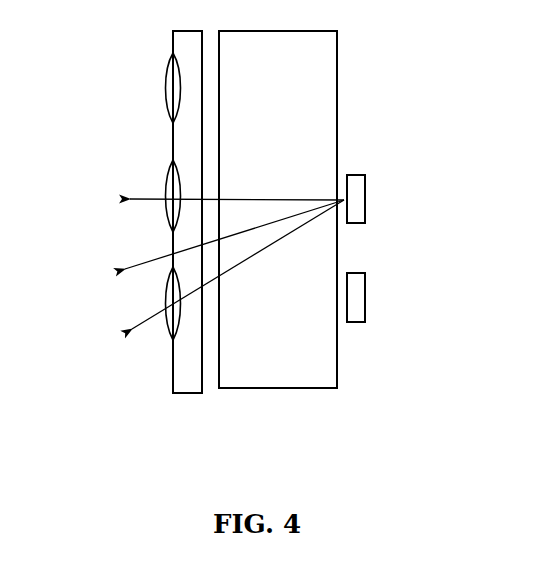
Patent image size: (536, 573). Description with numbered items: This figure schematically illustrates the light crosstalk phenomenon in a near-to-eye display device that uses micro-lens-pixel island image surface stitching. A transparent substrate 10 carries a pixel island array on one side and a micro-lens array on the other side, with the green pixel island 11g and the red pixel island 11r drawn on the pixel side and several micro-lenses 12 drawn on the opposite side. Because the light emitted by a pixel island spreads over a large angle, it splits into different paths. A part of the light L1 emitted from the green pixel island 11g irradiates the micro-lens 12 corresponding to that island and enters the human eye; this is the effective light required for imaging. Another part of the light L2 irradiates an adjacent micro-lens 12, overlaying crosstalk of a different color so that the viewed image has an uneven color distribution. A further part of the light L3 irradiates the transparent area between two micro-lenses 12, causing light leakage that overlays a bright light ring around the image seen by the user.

The transparent substrate 10 is at (267, 393).
The micro-lens 12 is at (167, 98).
The green pixel island 11g is at (366, 193).
The red pixel island 11r is at (366, 295).
The light L1 is at (223, 191).
The light L2 is at (223, 270).
The light L3 is at (226, 234).